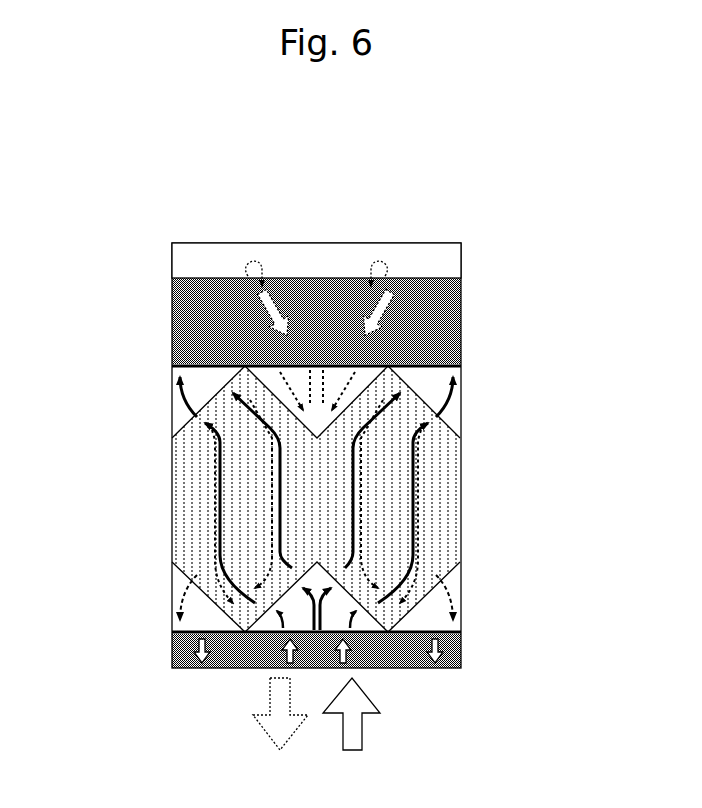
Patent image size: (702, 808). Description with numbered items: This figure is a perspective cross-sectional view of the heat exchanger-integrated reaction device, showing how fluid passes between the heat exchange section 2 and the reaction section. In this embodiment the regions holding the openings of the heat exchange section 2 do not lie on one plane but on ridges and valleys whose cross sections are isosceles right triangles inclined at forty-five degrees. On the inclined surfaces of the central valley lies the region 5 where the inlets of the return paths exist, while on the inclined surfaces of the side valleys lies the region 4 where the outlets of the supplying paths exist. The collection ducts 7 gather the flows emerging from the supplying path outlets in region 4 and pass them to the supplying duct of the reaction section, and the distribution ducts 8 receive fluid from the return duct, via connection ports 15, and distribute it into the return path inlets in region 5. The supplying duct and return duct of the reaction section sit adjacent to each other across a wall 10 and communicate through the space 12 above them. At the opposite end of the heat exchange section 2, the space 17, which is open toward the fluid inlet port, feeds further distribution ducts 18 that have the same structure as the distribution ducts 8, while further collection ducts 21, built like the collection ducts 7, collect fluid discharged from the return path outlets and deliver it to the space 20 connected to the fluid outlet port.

The heat exchange section 2 is at (152, 368).
The region where outlets of supplying paths exist 4 is at (206, 424).
The region where inlets of return paths exist 5 is at (334, 362).
The collection ducts 7 is at (255, 372).
The distribution ducts 8 is at (240, 372).
The wall 10 is at (290, 358).
The space 12 is at (480, 243).
The connection ports 15 is at (345, 425).
The space 17 is at (172, 650).
The distribution ducts 18 is at (245, 632).
The space 20 is at (261, 651).
The collection ducts 21 is at (407, 668).